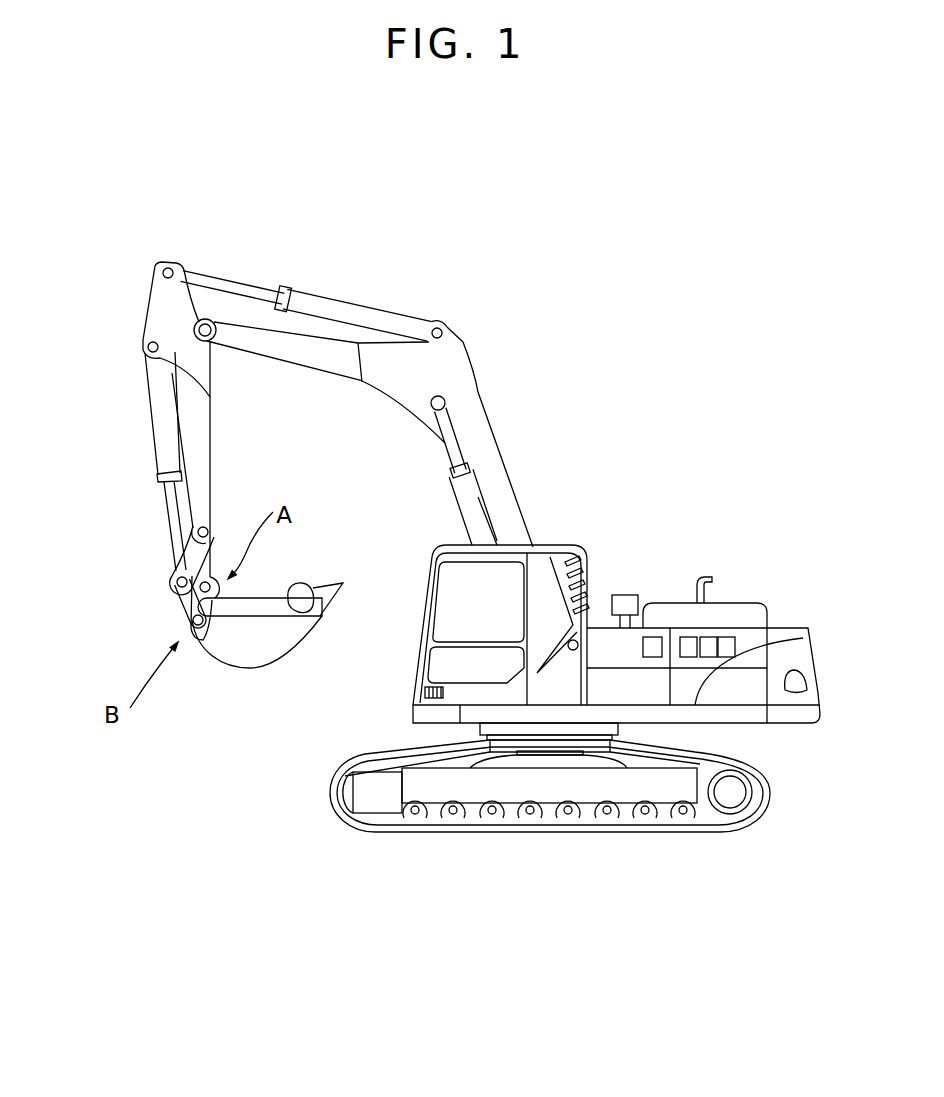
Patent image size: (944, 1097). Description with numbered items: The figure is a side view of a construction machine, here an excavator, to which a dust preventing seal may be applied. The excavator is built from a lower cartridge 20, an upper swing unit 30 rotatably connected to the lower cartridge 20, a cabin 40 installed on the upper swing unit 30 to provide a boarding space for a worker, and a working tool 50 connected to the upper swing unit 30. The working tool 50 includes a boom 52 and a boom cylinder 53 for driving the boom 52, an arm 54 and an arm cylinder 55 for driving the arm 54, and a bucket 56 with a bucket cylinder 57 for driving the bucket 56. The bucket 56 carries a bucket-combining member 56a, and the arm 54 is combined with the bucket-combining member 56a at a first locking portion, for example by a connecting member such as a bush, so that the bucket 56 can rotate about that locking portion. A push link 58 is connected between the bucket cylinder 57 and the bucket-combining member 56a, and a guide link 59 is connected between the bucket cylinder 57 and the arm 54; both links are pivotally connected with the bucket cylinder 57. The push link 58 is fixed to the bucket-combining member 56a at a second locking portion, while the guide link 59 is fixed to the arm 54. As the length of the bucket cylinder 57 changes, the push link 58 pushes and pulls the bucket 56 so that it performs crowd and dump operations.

The lower cartridge 20 is at (476, 846).
The upper swing unit 30 is at (772, 733).
The cabin 40 is at (556, 533).
The working tool 50 is at (262, 234).
The boom 52 is at (472, 410).
The boom cylinder 53 is at (467, 499).
The arm 54 is at (192, 438).
The arm cylinder 55 is at (358, 317).
The bucket 56 is at (247, 660).
The bucket-combining member 56a is at (205, 643).
The bucket cylinder 57 is at (160, 408).
The push link 58 is at (180, 597).
The guide link 59 is at (180, 560).